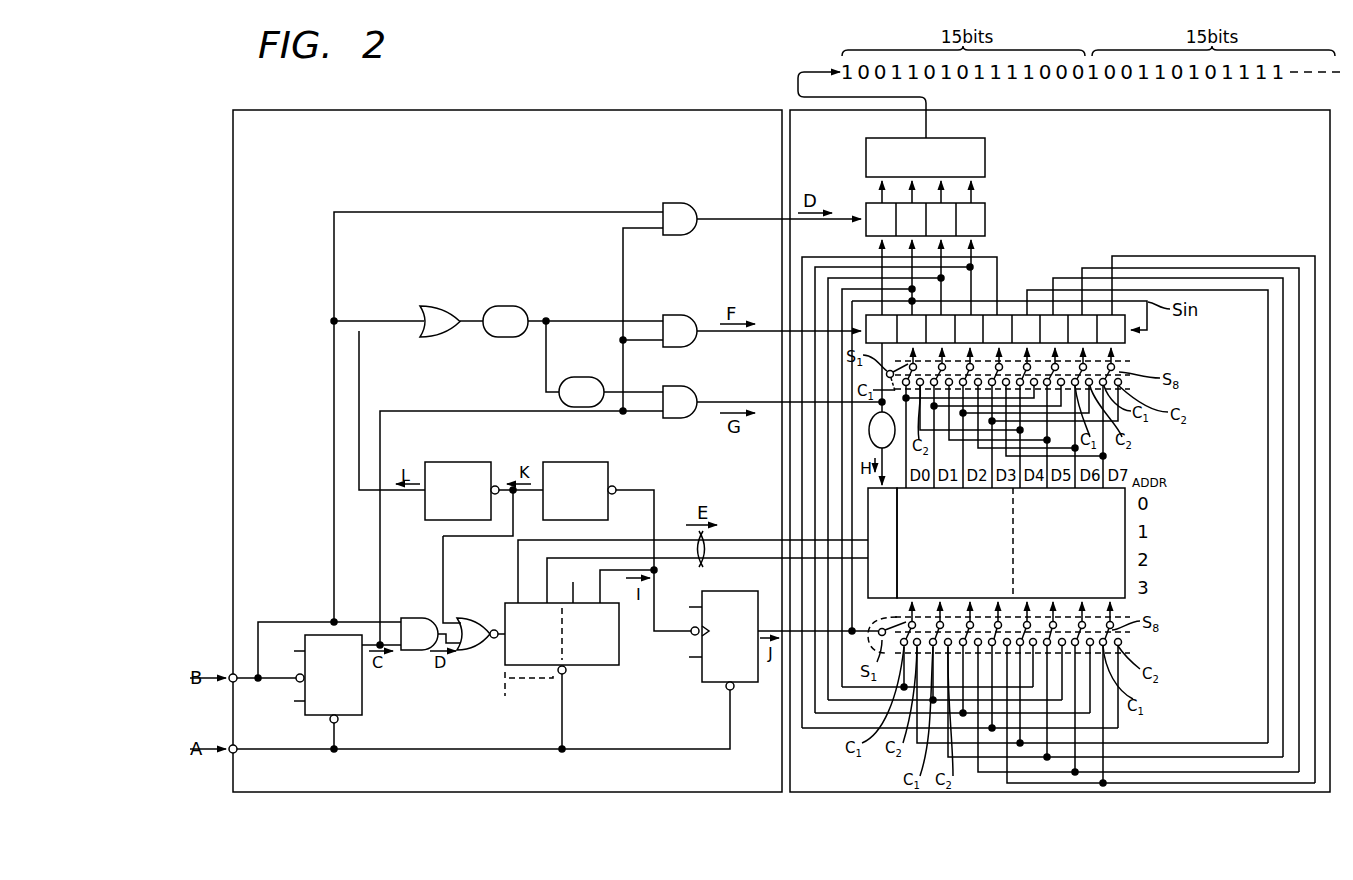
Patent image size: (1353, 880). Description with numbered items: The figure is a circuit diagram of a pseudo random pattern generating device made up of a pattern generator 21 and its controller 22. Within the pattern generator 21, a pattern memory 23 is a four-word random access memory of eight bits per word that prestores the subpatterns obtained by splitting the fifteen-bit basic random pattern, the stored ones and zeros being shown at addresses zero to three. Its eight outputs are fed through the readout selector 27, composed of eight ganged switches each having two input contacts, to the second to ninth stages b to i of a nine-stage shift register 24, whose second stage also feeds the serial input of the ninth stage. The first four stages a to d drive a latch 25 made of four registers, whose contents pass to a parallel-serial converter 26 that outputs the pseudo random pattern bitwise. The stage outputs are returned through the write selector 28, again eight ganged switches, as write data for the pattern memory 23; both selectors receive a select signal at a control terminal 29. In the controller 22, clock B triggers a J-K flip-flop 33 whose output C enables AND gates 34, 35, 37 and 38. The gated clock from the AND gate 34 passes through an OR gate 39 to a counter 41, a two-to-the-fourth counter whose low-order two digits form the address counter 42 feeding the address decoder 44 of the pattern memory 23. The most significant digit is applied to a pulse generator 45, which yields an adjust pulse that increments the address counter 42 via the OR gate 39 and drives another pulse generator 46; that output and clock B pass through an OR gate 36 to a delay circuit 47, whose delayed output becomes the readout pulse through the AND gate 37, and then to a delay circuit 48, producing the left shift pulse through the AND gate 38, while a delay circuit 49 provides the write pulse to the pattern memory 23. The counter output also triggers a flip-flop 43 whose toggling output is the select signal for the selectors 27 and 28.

The pattern generator 21 is at (795, 110).
The controller 22 is at (605, 110).
The pattern memory 23 is at (1125, 597).
The shift register 24 is at (1002, 315).
The latch 25 is at (985, 214).
The parallel-serial converter 26 is at (985, 150).
The readout selector 27 is at (1135, 366).
The write selector 28 is at (1136, 633).
The control terminal 29 is at (886, 374).
The J-K flip-flop 33 is at (362, 688).
The AND gate 34 is at (418, 650).
The AND gate 35 is at (685, 203).
The OR gate 36 is at (440, 306).
The AND gate 37 is at (685, 315).
The AND gate 38 is at (685, 386).
The OR gate 39 is at (471, 650).
The 2^n counter 41 is at (619, 640).
The address counter 42 is at (532, 681).
The flip-flop 43 is at (735, 591).
The address decoder 44 is at (868, 518).
The pulse generator 45 is at (596, 462).
The pulse generator 46 is at (487, 451).
The delay circuit 47 is at (510, 306).
The delay circuit 48 is at (588, 377).
The delay circuit 49 is at (869, 433).